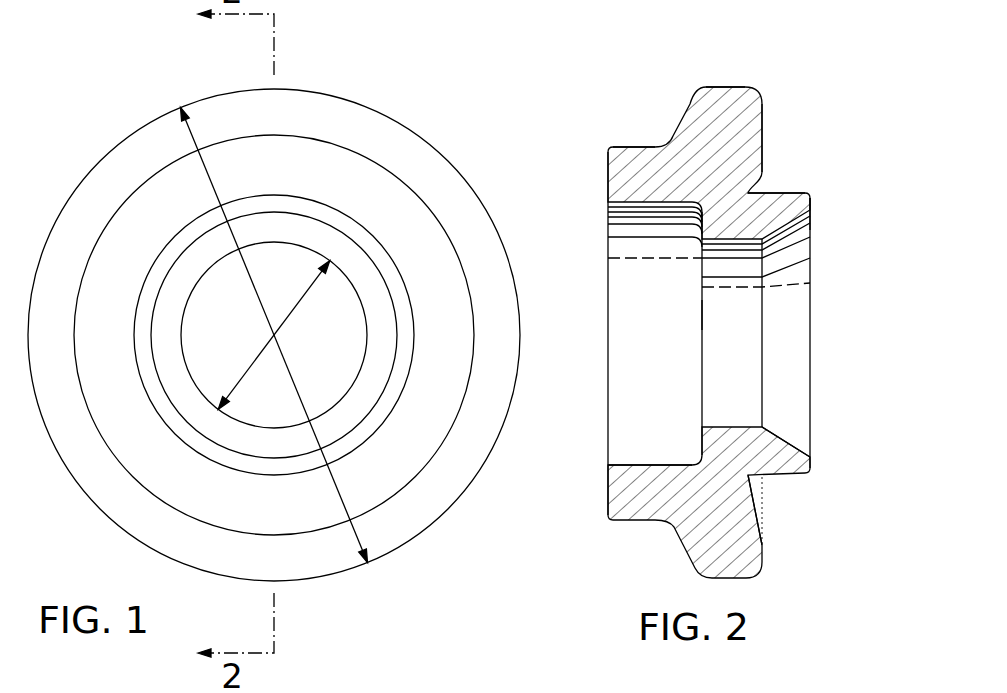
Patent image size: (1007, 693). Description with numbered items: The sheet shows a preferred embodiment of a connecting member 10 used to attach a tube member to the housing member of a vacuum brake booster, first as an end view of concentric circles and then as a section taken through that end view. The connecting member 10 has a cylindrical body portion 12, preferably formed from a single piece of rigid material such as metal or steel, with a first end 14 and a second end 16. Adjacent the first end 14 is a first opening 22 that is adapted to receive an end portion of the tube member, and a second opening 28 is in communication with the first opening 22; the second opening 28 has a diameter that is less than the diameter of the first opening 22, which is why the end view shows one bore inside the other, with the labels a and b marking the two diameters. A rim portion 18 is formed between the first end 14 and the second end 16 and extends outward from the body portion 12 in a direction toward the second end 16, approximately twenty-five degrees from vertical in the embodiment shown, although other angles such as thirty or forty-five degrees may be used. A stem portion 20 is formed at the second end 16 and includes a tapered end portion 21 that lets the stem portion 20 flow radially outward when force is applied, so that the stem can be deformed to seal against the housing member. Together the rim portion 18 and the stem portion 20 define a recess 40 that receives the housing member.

In FIG. 1, the connecting member 10 is at (436, 566).
In FIG. 2, the connecting member 10 is at (811, 536).
In FIG. 2, the cylindrical body portion 12 is at (772, 139).
In FIG. 2, the first end 14 is at (619, 134).
In FIG. 2, the second end 16 is at (821, 186).
In FIG. 2, the rim portion 18 is at (717, 87).
In FIG. 2, the stem portion 20 is at (797, 193).
In FIG. 2, the tapered end portion 21 is at (788, 443).
In FIG. 2, the first opening 22 is at (657, 378).
In FIG. 2, the second opening 28 is at (720, 315).
In FIG. 2, the recess 40 is at (748, 477).
In FIG. 1, the inner diameter a is at (218, 409).
In FIG. 1, the outer diameter b is at (180, 108).